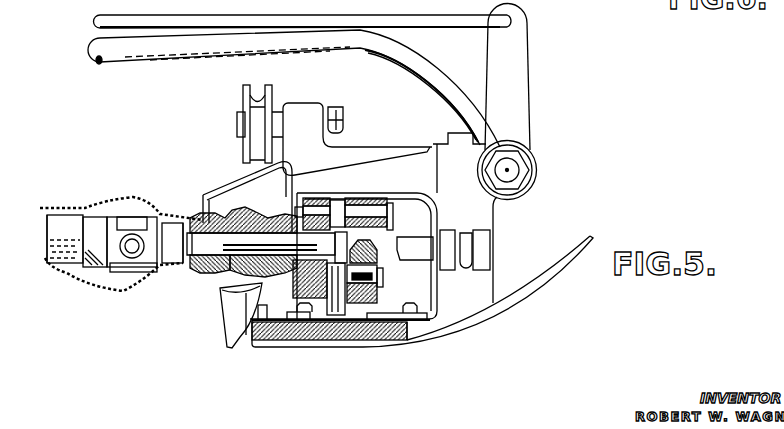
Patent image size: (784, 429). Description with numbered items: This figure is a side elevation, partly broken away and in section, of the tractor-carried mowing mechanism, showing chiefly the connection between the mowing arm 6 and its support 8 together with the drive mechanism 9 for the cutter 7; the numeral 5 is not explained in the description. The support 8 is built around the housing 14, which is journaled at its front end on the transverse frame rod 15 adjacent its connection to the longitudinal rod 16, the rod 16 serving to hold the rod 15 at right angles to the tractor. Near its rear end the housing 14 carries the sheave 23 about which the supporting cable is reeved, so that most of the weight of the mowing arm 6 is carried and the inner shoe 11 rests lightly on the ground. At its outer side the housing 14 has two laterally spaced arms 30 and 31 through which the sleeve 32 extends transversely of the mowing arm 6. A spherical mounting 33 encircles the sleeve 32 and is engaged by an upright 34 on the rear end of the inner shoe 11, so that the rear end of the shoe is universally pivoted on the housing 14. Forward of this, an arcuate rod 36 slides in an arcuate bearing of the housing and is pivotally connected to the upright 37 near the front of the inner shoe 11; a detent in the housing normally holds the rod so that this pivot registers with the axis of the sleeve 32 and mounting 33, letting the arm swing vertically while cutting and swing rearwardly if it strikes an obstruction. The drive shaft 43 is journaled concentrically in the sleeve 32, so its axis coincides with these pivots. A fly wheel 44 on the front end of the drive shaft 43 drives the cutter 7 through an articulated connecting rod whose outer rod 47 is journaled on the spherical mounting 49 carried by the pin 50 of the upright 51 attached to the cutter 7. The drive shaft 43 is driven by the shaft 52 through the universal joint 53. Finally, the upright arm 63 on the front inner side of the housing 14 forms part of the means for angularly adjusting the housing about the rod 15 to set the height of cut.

The flexible shaft assembly 5 is at (191, 371).
The mowing arm 6 is at (345, 358).
The cutter 7 is at (377, 327).
The support 8 is at (465, 161).
The drive mechanism 9 is at (58, 265).
The inner shoe 11 is at (508, 312).
The housing 14 is at (420, 148).
The rod 15 is at (512, 168).
The rod 16 is at (162, 53).
The sheave 23 is at (263, 105).
The arm 30 is at (200, 280).
The arm 31 is at (232, 348).
The sleeve 32 is at (201, 243).
The spherical mounting 33 is at (220, 288).
The upright 34 is at (233, 300).
The arcuate rod 36 is at (417, 247).
The upright 37 is at (482, 282).
The drive shaft 43 is at (200, 240).
The fly wheel 44 is at (295, 281).
The outer rod 47 is at (363, 254).
The spherical mounting 49 is at (377, 295).
The pin 50 is at (372, 278).
The upright 51 is at (322, 320).
The shaft 52 is at (68, 227).
The universal joint 53 is at (132, 240).
The upright arm 63 is at (512, 48).